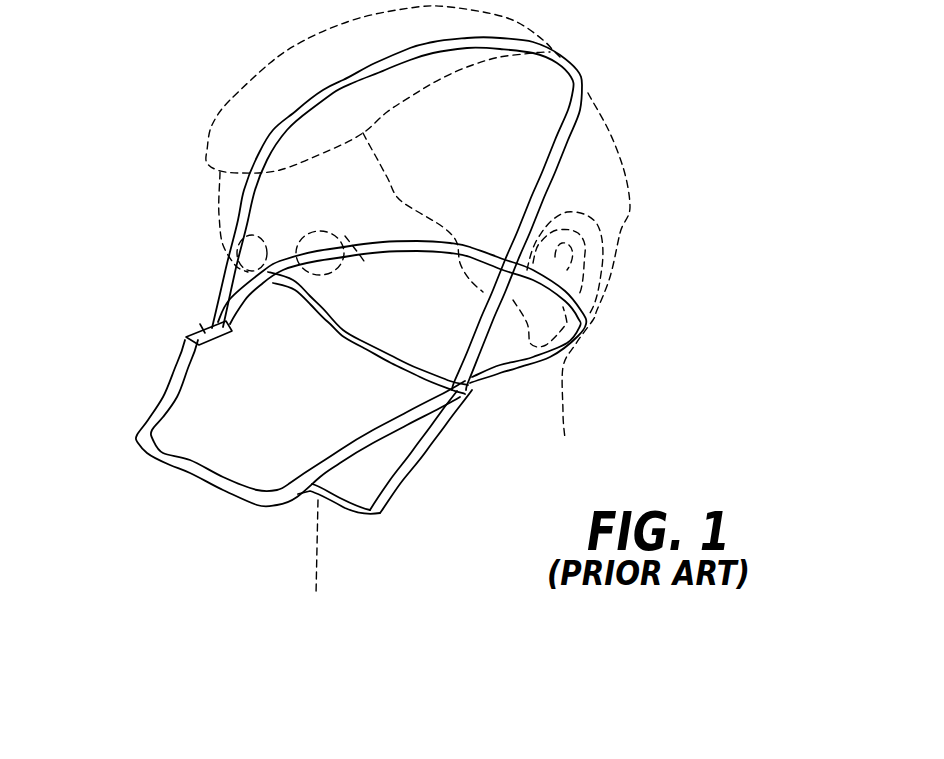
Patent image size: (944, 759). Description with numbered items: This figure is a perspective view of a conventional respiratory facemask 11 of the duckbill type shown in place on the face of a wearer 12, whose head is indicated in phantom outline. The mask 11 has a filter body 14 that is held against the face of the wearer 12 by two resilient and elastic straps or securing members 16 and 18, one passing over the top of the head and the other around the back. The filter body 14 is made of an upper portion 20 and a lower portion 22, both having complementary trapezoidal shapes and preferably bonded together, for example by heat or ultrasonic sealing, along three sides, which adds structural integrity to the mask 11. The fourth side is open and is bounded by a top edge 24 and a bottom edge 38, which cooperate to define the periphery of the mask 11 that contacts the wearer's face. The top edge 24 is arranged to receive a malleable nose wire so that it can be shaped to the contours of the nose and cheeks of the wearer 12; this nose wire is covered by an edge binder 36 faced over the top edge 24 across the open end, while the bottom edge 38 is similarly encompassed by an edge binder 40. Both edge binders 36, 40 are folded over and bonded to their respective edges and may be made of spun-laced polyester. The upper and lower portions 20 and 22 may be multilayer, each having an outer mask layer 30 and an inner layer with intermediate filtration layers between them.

The facemask 11 is at (122, 479).
The wearer 12 is at (633, 207).
The filter body 14 is at (177, 478).
The securing member 16 is at (234, 219).
The securing member 18 is at (378, 241).
The upper portion 20 is at (210, 369).
The lower portion 22 is at (331, 495).
The top edge 24 is at (380, 354).
The outer mask layer 30 is at (178, 408).
The edge binder 36 is at (327, 328).
The bottom edge 38 is at (420, 450).
The edge binder 40 is at (379, 508).